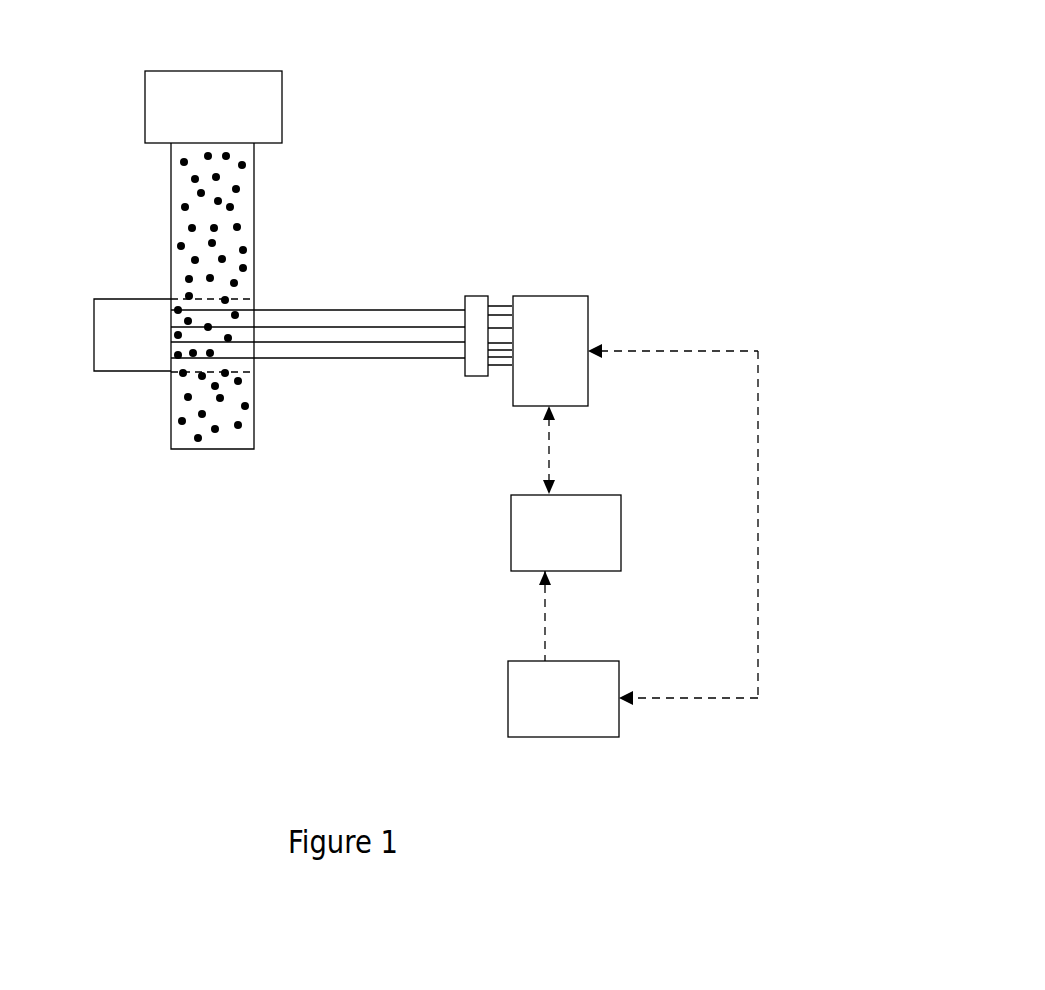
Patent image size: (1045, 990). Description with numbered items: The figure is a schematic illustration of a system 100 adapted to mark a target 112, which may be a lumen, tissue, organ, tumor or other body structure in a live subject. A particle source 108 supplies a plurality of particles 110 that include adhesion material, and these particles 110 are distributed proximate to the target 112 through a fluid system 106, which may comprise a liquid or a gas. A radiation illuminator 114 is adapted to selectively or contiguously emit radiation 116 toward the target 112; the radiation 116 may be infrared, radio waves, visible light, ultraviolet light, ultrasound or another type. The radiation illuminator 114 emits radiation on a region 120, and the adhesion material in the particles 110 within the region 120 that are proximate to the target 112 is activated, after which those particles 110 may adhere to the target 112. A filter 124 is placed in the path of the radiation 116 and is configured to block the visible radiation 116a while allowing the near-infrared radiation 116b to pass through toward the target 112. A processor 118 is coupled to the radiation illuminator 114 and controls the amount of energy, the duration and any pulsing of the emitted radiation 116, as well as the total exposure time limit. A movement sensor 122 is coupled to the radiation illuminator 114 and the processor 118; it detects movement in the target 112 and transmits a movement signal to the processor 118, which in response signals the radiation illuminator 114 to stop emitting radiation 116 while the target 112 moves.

The system 100 is at (627, 107).
The fluid system 106 is at (171, 203).
The particle source 108 is at (213, 71).
The particles 110 is at (203, 308).
The target 112 is at (130, 299).
The radiation illuminator 114 is at (588, 319).
The radiation 116 is at (438, 193).
The visible radiation 116a is at (495, 300).
The near-infrared radiation 116b is at (320, 310).
The processor 118 is at (592, 661).
The region 120 is at (240, 372).
The movement sensor 122 is at (593, 495).
The filter 124 is at (477, 379).